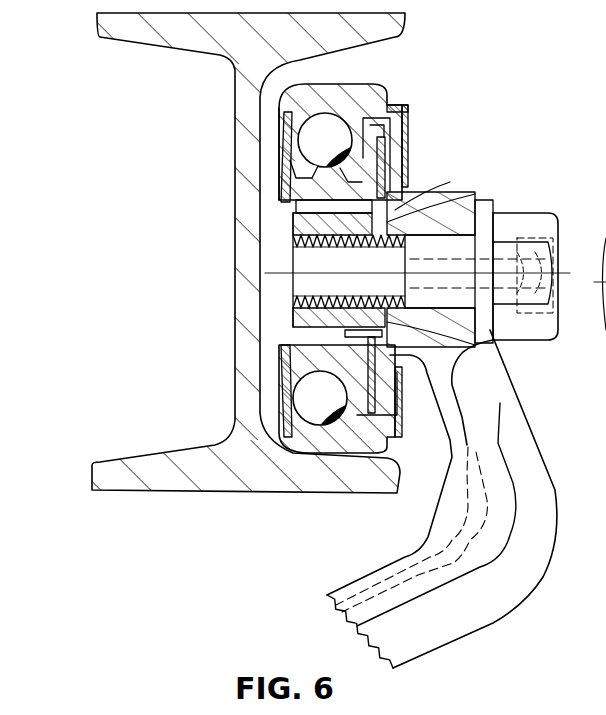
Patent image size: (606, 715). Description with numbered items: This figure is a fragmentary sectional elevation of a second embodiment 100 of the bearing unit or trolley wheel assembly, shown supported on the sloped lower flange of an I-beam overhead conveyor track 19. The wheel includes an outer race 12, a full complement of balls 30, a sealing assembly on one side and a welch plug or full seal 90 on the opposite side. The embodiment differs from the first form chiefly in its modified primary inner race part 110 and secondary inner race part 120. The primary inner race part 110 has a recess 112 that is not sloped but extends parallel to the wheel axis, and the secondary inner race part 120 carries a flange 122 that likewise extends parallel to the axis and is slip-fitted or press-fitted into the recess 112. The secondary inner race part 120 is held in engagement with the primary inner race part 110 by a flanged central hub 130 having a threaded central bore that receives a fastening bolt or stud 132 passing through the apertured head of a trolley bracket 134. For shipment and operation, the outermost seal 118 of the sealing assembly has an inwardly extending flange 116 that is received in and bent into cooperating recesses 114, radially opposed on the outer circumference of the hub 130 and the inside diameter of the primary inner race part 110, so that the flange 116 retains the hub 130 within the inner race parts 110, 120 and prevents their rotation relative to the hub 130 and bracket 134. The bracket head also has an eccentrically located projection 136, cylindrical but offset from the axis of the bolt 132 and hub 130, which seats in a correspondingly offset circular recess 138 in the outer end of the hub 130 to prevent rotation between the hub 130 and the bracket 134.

The outer race 12 is at (385, 81).
The I-beam overhead conveyor track 19 is at (134, 492).
The balls 30 is at (325, 140).
The welch plug or full seal 90 is at (300, 390).
The second embodiment of the bearing unit or trolley wheel assembly 100 is at (462, 45).
The primary inner race part 110 is at (406, 140).
The recess 112 is at (350, 198).
The cooperating recesses 114 is at (398, 186).
The inwardly extending flange 116 is at (425, 208).
The outermost seal 118 is at (412, 108).
The secondary inner race part 120 is at (296, 175).
The flange 122 is at (300, 208).
The flanged central hub 130 is at (300, 327).
The fastening bolt or stud 132 is at (540, 222).
The trolley bracket 134 is at (500, 403).
The eccentrically located projection 136 is at (385, 318).
The offset circular recess 138 is at (478, 194).